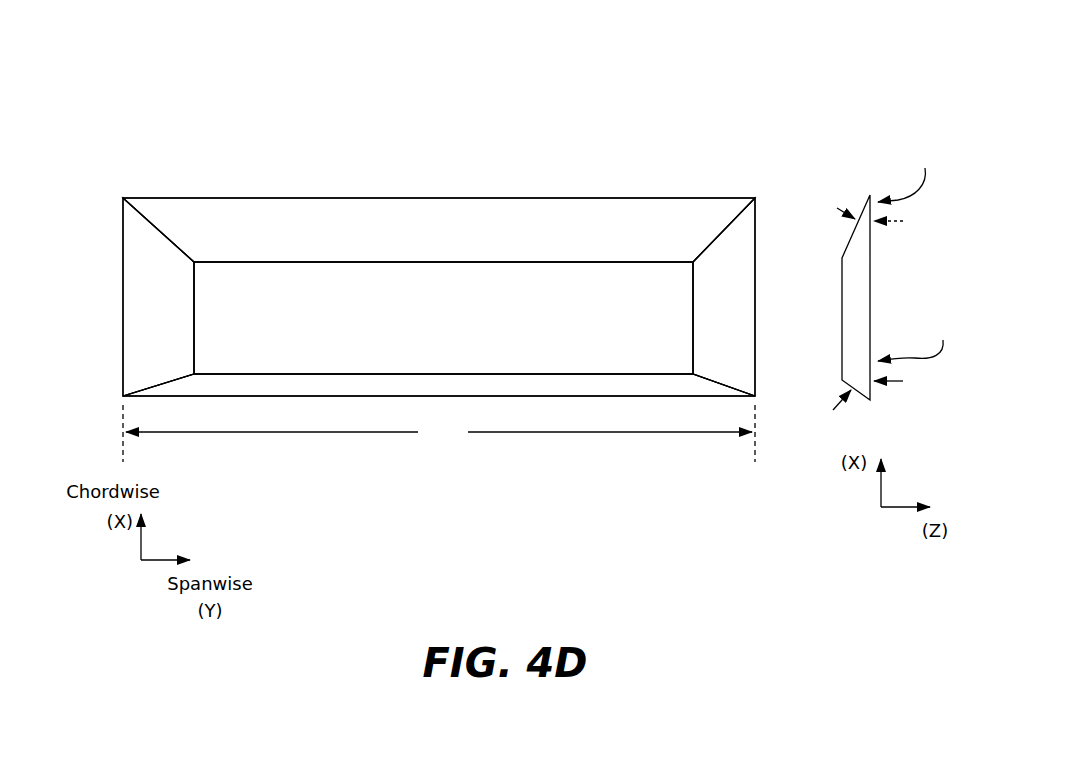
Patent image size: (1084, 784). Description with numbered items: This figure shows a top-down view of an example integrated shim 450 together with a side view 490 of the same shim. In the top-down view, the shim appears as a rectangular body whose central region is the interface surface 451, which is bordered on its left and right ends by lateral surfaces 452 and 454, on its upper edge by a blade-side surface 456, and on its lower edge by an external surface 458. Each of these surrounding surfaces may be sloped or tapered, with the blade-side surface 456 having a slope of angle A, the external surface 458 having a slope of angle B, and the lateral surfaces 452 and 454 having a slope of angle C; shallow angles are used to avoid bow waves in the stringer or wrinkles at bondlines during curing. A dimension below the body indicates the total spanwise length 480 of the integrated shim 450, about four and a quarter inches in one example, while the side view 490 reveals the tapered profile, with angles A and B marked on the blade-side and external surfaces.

The integrated shim 450 is at (118, 104).
The interface surface 451 is at (213, 312).
The lateral surface 452 is at (136, 242).
The lateral surface 454 is at (742, 237).
The blade-side surface 456 is at (436, 222).
The external surface 458 is at (605, 387).
The total spanwise length 480 is at (439, 433).
The side view 490 is at (865, 137).